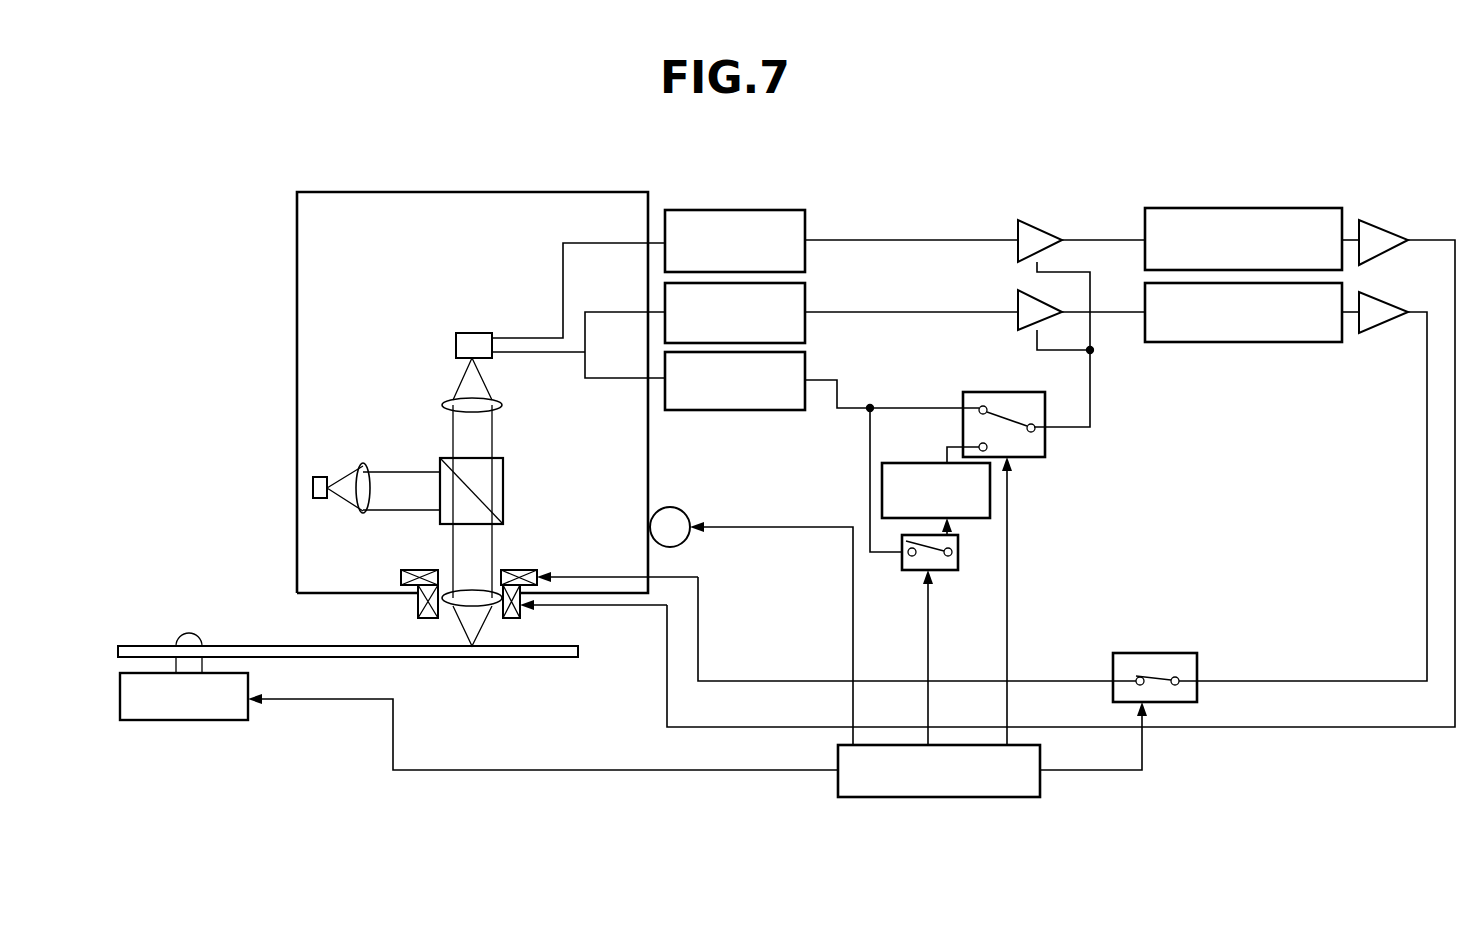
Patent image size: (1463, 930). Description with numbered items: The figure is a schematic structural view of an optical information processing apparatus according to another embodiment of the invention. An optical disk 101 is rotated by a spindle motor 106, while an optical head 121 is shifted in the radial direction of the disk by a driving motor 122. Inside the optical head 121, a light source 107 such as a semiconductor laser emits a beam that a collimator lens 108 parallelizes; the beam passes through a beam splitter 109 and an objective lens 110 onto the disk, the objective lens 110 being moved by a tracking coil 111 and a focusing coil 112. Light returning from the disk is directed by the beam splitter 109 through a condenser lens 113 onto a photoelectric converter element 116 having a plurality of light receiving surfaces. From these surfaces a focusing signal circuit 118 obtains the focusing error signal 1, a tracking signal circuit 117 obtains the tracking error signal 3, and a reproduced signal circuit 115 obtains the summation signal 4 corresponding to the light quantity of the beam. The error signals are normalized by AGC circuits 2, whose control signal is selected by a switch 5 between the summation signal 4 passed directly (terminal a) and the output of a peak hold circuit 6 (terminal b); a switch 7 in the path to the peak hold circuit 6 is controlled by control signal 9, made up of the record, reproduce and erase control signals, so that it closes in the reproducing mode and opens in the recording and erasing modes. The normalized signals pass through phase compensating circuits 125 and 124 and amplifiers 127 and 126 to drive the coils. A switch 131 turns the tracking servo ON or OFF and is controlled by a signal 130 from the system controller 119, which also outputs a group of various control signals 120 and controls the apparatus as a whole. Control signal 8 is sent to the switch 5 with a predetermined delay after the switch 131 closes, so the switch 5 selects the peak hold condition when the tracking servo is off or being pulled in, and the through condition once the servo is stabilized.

The focusing error signal 1 is at (862, 239).
The AGC circuit 2 is at (1042, 224).
The tracking error signal 3 is at (862, 311).
The summation signal 4 is at (845, 406).
The switch 5 is at (985, 391).
The peak hold circuit 6 is at (915, 462).
The switch 7 is at (959, 561).
The AGC control signal 8 is at (1010, 645).
The AGC control signal 9 is at (932, 645).
The optical disk 101 is at (579, 651).
The spindle motor 106 is at (203, 721).
The light source 107 is at (322, 476).
The collimator lens 108 is at (372, 516).
The beam splitter 109 is at (446, 456).
The objective lens 110 is at (483, 592).
The tracking coil 111 is at (545, 570).
The focusing coil 112 is at (522, 615).
The condenser lens 113 is at (503, 401).
The reproduced signal circuit 115 is at (770, 411).
The photoelectric converter element 116 is at (470, 332).
The tracking signal circuit 117 is at (806, 331).
The focusing signal circuit 118 is at (732, 209).
The system controller 119 is at (1041, 791).
The control signals 120 is at (458, 770).
The optical head 121 is at (372, 191).
The driving motor 122 is at (680, 505).
The phase compensating circuit 124 is at (1283, 343).
The phase compensating circuit 125 is at (1198, 207).
The amplifier 126 is at (1382, 292).
The amplifier 127 is at (1385, 219).
The signal 130 is at (1143, 749).
The switch 131 is at (1168, 652).